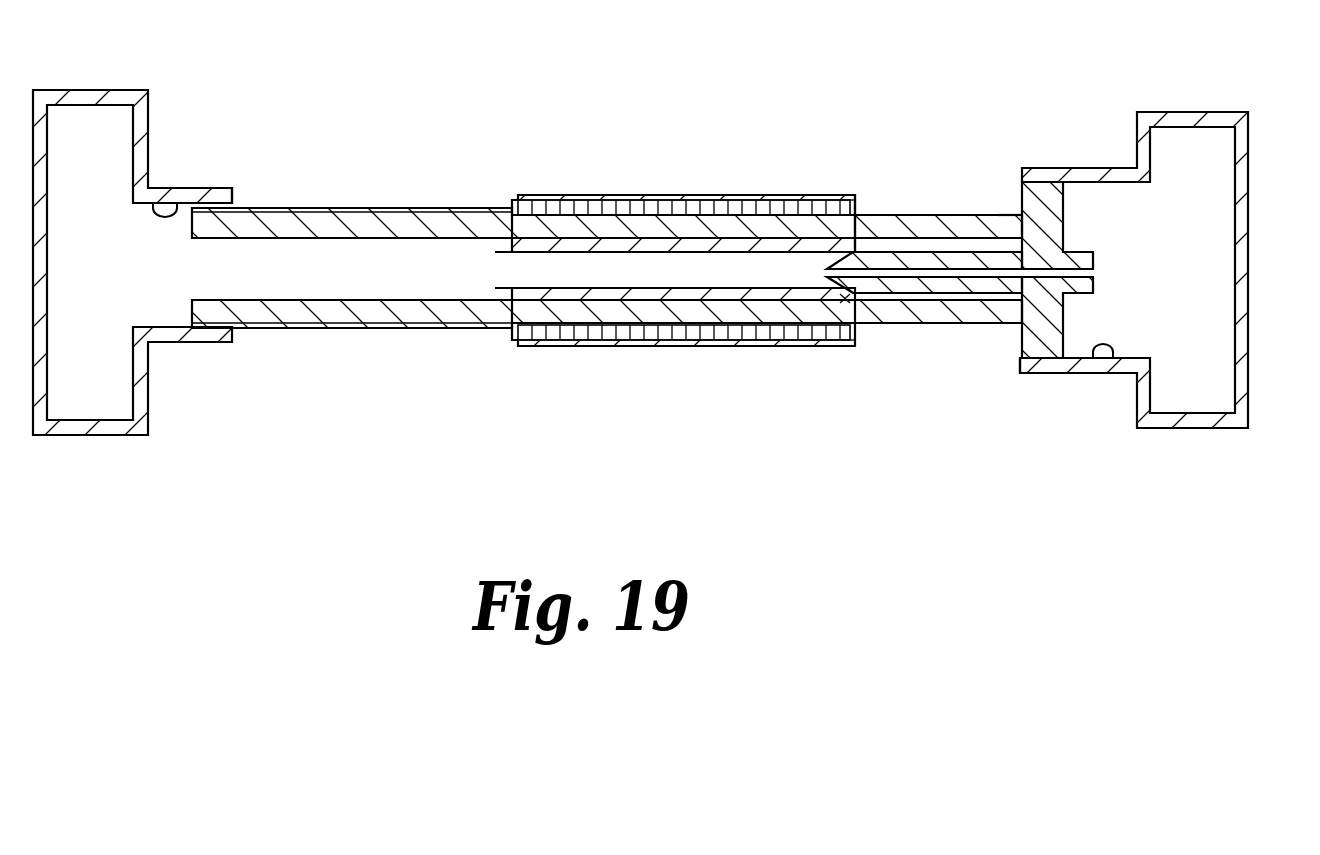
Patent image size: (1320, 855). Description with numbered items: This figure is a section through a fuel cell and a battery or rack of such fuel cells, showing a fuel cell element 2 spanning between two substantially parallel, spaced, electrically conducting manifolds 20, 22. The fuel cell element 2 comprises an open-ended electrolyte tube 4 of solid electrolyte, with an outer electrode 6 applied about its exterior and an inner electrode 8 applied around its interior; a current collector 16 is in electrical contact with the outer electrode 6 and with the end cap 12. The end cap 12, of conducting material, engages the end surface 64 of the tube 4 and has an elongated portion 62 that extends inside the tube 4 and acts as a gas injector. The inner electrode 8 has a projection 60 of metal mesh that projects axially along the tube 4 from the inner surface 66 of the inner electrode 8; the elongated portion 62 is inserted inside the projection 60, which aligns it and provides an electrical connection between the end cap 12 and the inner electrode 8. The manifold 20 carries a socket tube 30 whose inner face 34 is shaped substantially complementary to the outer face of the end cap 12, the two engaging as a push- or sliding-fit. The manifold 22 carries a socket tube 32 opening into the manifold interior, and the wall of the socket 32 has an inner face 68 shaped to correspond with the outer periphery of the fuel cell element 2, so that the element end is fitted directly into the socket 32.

The fuel cell element 2 is at (633, 180).
The electrolyte tube 4 is at (917, 223).
The outer electrode 6 is at (753, 208).
The inner electrode 8 is at (848, 295).
The end cap 12 is at (1020, 200).
The current collector 16 is at (528, 197).
The manifold 20 is at (1240, 173).
The manifold 22 is at (102, 95).
The socket tube 30 is at (1035, 373).
The socket tube 32 is at (222, 188).
The inner face of socket 34 is at (1113, 363).
The projection 60 is at (957, 307).
The elongated portion 62 is at (887, 263).
The end surface 64 is at (1010, 217).
The inner surface 66 is at (500, 262).
The inner face of socket 68 is at (165, 210).